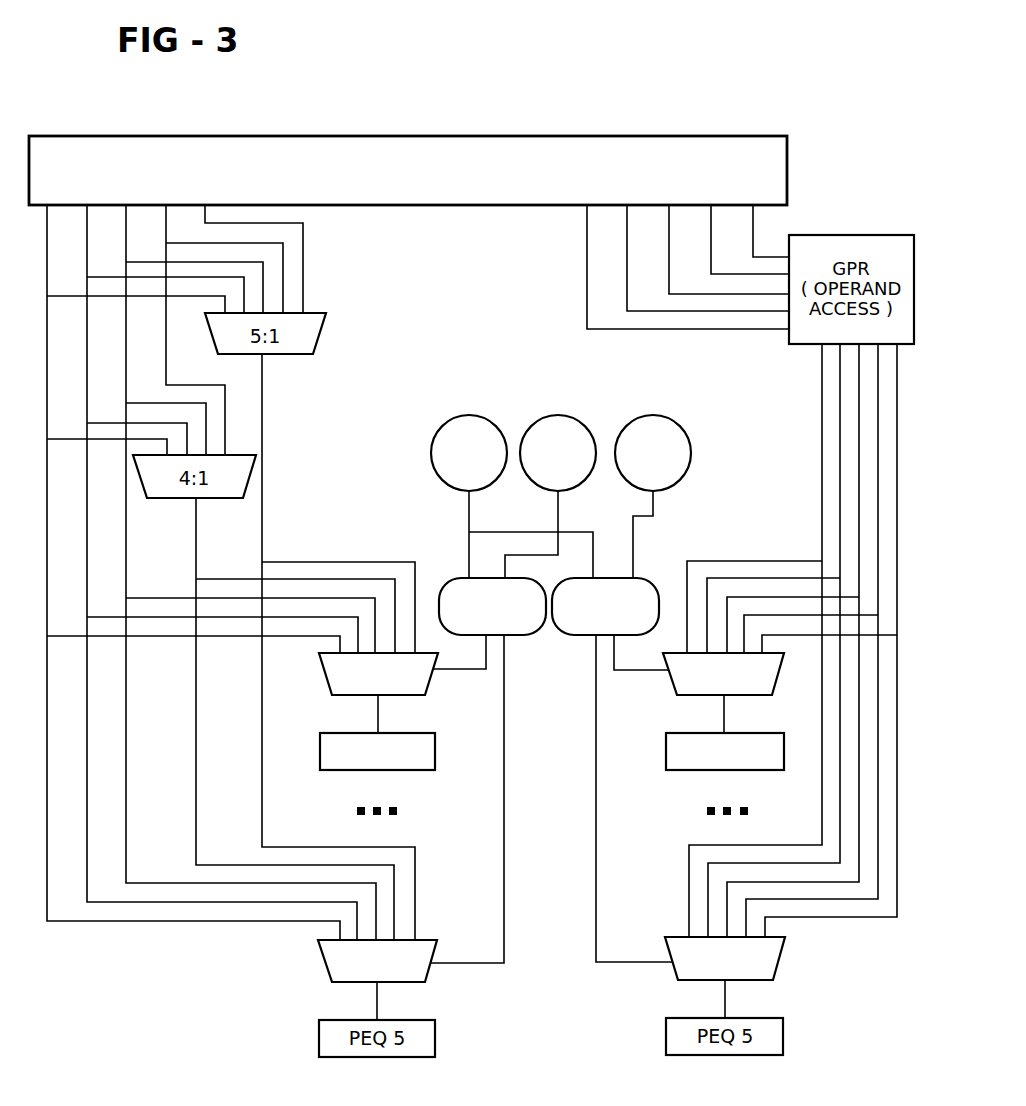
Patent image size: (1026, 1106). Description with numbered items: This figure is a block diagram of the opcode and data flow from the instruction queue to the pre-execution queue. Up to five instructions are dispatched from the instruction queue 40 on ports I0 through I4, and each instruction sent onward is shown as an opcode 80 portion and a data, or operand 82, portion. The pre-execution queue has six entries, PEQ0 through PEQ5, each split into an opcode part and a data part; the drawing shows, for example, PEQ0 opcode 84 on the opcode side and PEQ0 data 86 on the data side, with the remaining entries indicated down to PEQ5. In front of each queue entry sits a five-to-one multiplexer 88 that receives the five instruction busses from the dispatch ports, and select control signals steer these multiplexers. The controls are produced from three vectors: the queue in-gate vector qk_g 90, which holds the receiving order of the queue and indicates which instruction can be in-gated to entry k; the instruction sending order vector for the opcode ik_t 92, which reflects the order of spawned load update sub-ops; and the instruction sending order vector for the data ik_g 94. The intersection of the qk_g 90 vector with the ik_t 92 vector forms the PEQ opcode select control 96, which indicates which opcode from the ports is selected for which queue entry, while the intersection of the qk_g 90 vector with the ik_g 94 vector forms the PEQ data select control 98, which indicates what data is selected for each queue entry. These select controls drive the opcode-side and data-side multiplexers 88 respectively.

The instruction queue 40 is at (516, 119).
The opcode 80 is at (100, 145).
The operand 82 is at (667, 143).
The PEQ0 opcode 84 is at (372, 771).
The PEQ0 data 86 is at (705, 771).
The 5 to 1 multiplexer 88 is at (323, 673).
The queue in-gate vector 90 is at (462, 416).
The instruction sending order vector for the opcode 92 is at (557, 415).
The instruction sending order vector for the data 94 is at (663, 417).
The PEQ opcode select control 96 is at (446, 580).
The PEQ data select control 98 is at (655, 580).